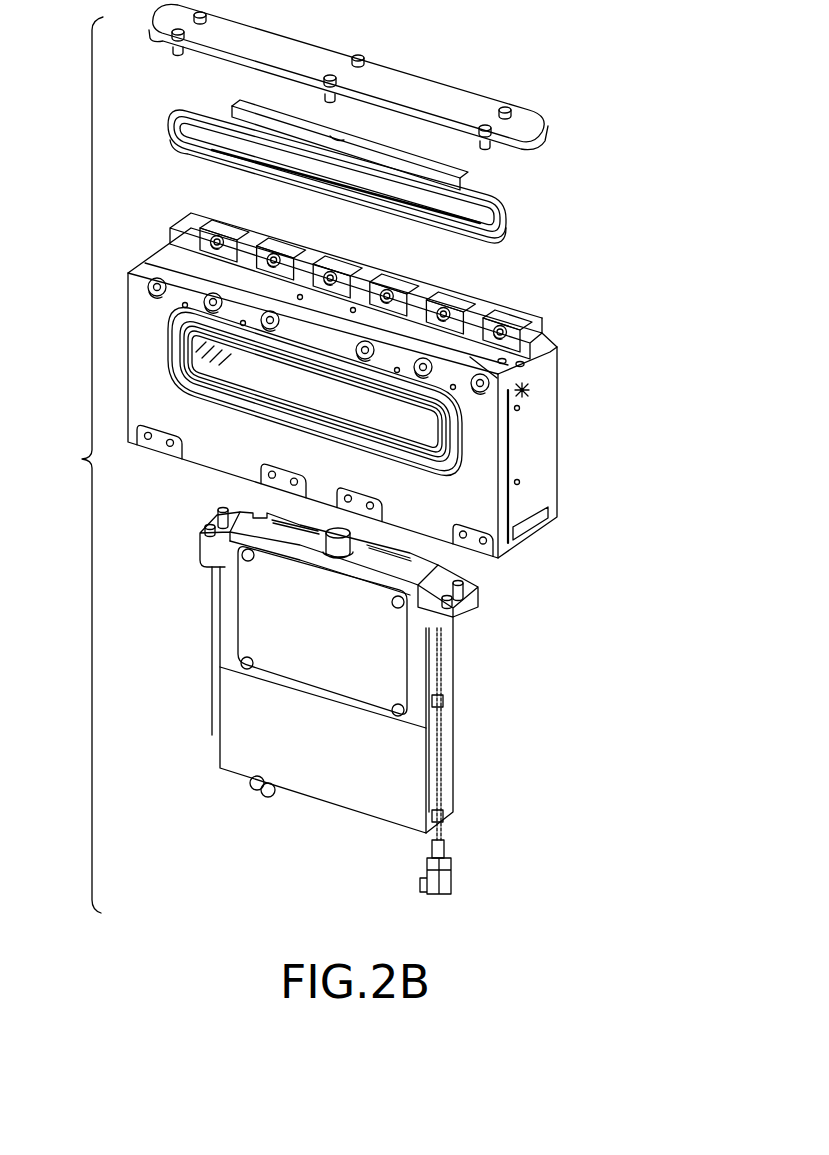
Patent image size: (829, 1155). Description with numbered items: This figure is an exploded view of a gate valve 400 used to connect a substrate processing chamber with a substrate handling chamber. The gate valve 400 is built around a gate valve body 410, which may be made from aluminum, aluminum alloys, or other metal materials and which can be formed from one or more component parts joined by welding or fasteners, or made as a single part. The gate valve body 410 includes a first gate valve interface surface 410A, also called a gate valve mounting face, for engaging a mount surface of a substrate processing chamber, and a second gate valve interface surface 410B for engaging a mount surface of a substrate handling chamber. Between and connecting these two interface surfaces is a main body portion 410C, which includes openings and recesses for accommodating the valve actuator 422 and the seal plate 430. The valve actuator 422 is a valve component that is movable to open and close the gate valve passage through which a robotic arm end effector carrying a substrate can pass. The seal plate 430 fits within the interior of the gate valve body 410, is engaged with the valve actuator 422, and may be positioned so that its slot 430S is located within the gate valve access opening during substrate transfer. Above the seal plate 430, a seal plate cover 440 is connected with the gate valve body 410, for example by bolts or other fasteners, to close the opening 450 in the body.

The gate valve 400 is at (72, 465).
The seal plate cover 440 is at (546, 92).
The seal plate 430 is at (348, 171).
The slot 430S is at (212, 148).
The gate valve body 410 is at (380, 403).
The first gate valve interface surface 410A is at (153, 393).
The second gate valve interface surface 410B is at (558, 376).
The opening 450 is at (540, 396).
The main body portion 410C is at (525, 497).
The valve actuator 422 is at (476, 708).